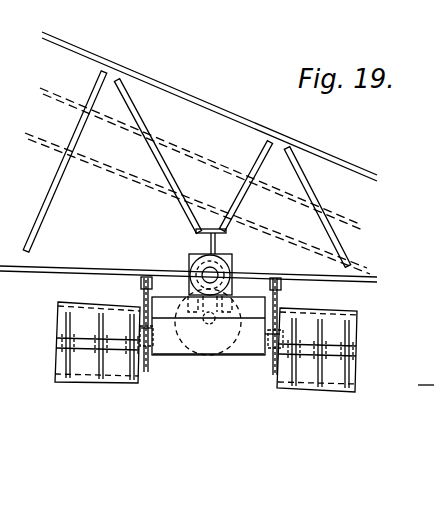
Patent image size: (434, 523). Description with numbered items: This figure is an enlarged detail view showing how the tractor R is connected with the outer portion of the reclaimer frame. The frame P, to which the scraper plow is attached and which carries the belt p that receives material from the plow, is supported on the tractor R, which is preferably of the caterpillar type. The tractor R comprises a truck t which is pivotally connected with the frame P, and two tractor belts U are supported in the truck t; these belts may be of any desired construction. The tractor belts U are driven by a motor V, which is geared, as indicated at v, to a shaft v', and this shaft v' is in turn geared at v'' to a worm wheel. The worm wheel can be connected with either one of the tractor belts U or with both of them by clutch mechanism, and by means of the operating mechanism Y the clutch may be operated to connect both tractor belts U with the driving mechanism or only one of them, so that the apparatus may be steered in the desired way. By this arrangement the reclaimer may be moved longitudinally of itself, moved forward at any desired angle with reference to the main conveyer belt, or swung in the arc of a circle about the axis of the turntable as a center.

The frame P is at (236, 112).
The belt p is at (355, 267).
The operating mechanism Y is at (196, 220).
The motor V is at (196, 264).
The gearing v is at (234, 276).
The shaft v' is at (196, 335).
The gearing to worm wheel v'' is at (213, 332).
The truck t is at (260, 308).
The tractor belts U is at (56, 353).
The tractor R is at (188, 284).